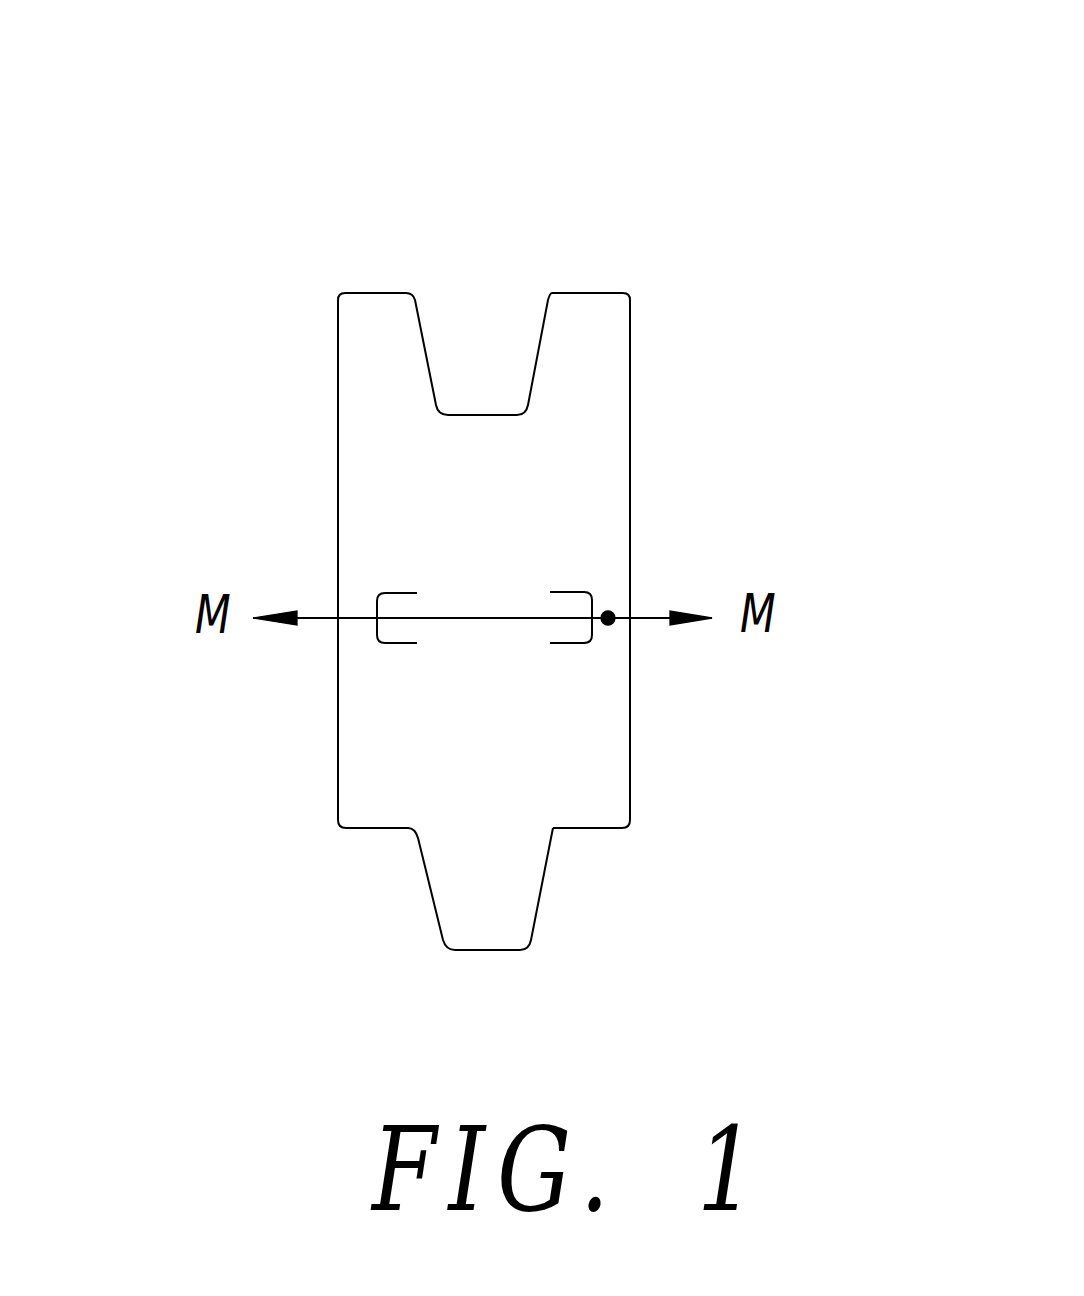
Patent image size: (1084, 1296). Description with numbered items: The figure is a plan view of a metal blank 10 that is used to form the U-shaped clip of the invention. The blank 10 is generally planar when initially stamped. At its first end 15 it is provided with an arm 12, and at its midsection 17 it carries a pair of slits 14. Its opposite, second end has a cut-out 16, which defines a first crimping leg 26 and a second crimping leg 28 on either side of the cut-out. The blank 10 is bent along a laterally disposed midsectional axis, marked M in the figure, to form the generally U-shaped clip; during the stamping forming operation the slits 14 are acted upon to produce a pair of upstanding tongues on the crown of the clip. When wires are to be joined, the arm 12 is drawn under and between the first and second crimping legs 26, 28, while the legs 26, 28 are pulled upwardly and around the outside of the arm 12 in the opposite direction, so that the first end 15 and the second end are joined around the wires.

The metal blank 10 is at (484, 624).
The arm 12 is at (488, 876).
The slits 14 is at (580, 578).
The first end 15 is at (367, 883).
The cut-out 16 is at (482, 342).
The midsection 17 is at (608, 618).
The first crimping leg 26 is at (388, 343).
The second crimping leg 28 is at (582, 357).